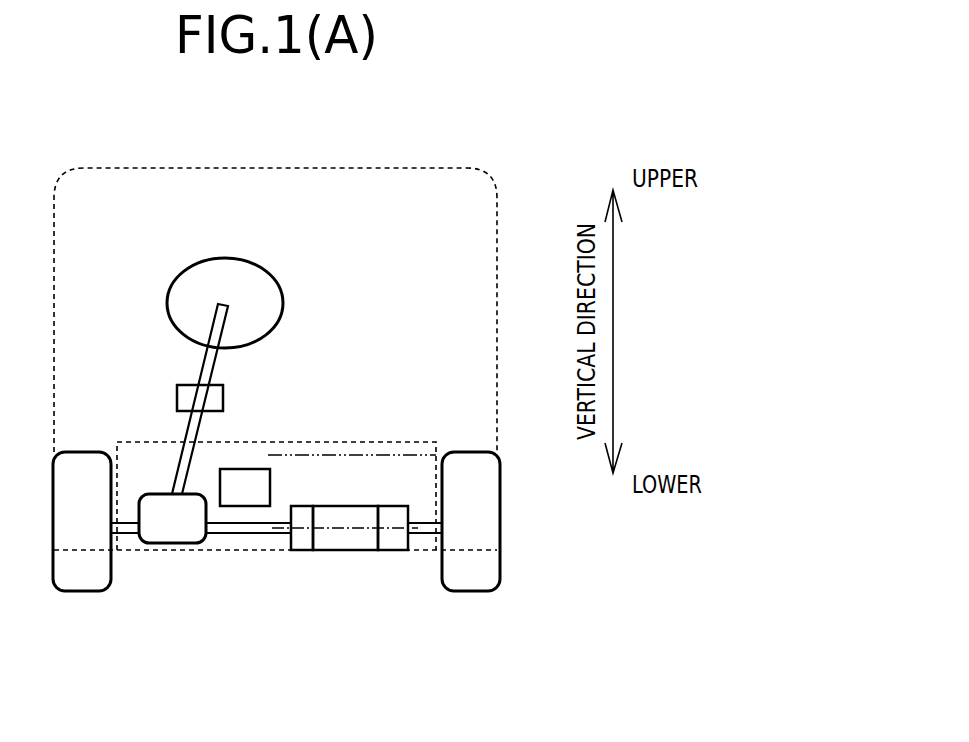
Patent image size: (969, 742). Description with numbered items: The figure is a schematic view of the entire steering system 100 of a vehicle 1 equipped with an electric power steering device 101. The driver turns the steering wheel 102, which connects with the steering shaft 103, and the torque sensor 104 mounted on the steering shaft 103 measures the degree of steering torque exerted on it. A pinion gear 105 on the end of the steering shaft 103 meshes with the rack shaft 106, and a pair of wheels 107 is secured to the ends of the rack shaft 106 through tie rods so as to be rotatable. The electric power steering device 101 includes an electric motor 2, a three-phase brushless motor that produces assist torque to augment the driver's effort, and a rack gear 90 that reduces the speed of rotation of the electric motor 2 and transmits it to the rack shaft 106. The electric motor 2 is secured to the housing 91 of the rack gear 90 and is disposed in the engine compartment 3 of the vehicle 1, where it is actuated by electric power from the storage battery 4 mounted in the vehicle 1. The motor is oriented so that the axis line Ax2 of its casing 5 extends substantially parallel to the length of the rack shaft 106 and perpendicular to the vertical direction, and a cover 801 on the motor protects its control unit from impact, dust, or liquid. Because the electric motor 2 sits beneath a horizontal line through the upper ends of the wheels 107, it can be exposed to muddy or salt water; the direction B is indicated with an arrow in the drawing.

The vehicle 1 is at (280, 168).
The steering system 100 is at (143, 285).
The electric power steering device 101 is at (398, 284).
The steering wheel 102 is at (283, 300).
The steering shaft 103 is at (200, 370).
The torque sensor 104 is at (177, 400).
The pinion gear 105 is at (175, 537).
The rack shaft 106 is at (238, 531).
The wheels 107 is at (88, 580).
The electric motor 2 is at (345, 561).
The engine compartment 3 is at (314, 442).
The storage battery 4 is at (243, 475).
The casing 5 is at (355, 548).
The cover 801 is at (298, 546).
The rack gear 90 is at (386, 583).
The housing 91 is at (396, 546).
The axis line Ax2 is at (345, 525).
The direction B is at (400, 408).